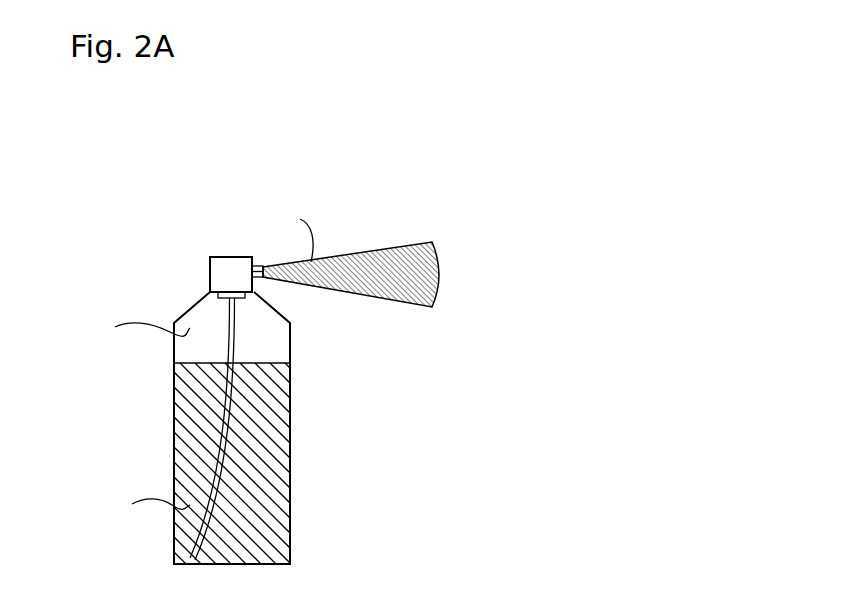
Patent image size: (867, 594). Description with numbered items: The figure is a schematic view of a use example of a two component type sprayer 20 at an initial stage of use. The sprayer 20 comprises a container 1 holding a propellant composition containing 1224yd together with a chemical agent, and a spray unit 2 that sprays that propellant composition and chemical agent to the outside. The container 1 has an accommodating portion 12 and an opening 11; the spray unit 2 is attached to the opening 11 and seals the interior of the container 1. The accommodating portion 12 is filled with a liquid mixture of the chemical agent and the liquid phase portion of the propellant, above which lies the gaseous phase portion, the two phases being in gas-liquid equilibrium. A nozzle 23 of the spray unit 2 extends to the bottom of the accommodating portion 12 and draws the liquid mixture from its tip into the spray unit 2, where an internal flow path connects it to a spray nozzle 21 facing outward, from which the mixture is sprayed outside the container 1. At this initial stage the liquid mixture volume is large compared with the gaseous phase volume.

The sprayer 20 is at (212, 185).
The spray unit 2 is at (202, 251).
The spray nozzle 21 is at (258, 266).
The container 1 is at (303, 408).
The opening 11 is at (216, 296).
The accommodating portion 12 is at (291, 453).
The nozzle 23 is at (208, 415).